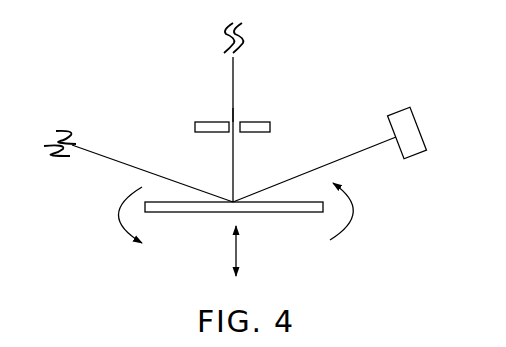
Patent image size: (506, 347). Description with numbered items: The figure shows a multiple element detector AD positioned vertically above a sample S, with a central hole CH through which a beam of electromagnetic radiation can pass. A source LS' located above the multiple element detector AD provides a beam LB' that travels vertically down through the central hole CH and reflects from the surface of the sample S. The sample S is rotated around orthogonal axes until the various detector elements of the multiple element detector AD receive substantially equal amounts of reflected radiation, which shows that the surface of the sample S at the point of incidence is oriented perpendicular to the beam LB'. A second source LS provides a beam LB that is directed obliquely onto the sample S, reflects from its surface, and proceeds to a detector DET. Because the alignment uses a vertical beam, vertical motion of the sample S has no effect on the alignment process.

The source LS is at (48, 140).
The source LS' is at (251, 38).
The beam of electromagnetic radiation LB is at (152, 155).
The beam of electromagnetic radiation LB' is at (276, 129).
The central hole CH is at (237, 117).
The multiple element detector AD is at (273, 120).
The detector DET is at (418, 110).
The sample S is at (253, 215).